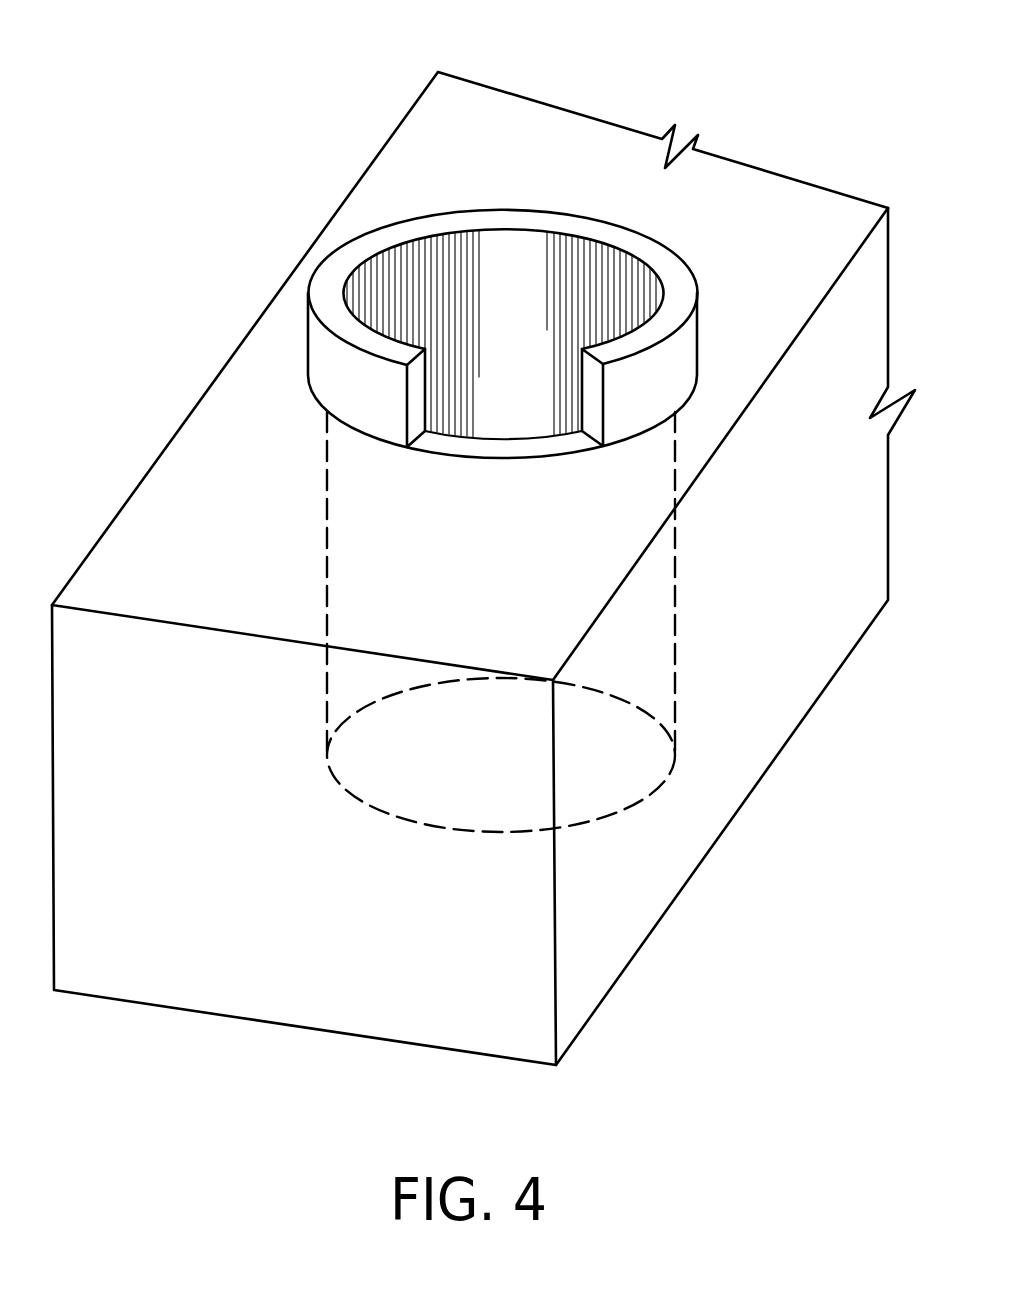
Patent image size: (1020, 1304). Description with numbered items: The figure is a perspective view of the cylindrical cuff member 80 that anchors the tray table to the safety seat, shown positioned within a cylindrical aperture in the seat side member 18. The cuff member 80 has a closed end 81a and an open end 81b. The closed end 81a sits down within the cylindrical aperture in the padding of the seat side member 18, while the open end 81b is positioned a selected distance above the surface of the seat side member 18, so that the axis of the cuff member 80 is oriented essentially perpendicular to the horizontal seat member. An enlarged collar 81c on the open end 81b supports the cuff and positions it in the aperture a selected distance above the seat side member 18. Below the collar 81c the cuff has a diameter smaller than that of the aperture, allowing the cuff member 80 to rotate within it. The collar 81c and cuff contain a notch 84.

The seat side member 18 is at (360, 190).
The cylindrical cuff member 80 is at (772, 240).
The closed end 81a is at (430, 823).
The open end 81b is at (485, 270).
The enlarged collar 81c is at (648, 390).
The notch 84 is at (512, 418).